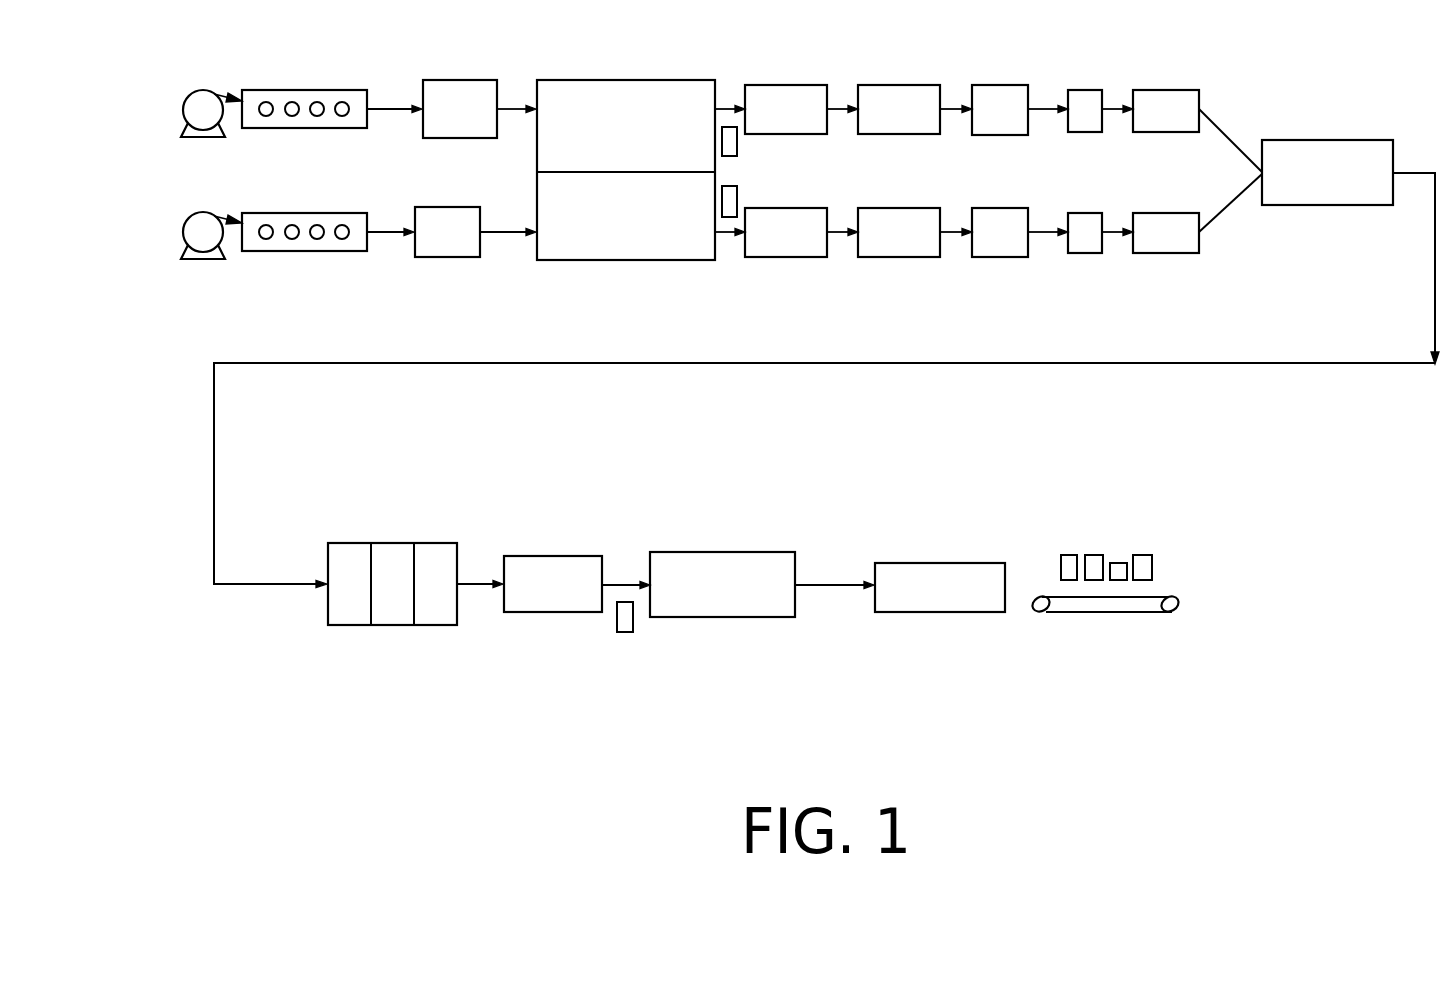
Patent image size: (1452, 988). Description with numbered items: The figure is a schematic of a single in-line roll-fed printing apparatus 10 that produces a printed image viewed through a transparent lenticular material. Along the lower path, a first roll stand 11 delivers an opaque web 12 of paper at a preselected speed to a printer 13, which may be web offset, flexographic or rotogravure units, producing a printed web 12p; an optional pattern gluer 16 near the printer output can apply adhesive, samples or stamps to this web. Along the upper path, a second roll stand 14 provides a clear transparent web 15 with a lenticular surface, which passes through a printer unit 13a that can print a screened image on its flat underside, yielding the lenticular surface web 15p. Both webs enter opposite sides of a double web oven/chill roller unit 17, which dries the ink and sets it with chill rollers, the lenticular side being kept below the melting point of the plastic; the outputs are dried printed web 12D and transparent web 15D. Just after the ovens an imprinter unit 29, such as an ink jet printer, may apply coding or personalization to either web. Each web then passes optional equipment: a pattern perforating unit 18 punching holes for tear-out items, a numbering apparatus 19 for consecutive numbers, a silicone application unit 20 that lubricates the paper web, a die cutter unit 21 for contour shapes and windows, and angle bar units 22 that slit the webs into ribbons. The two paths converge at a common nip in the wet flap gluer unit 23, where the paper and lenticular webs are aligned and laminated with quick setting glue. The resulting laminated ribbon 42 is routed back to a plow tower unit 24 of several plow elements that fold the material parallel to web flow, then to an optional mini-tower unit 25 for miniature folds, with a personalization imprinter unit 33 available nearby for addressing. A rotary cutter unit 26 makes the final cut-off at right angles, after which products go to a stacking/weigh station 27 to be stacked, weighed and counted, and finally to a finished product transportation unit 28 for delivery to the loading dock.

The in-line printing apparatus 10 is at (294, 68).
The first roll stand 11 is at (182, 231).
The opaque web 12 is at (225, 215).
The printed web 12p is at (387, 233).
The dried printed web 12D is at (722, 235).
The printer 13 is at (267, 252).
The printer unit 13a is at (267, 128).
The second roll stand 14 is at (187, 100).
The transparent web 15 is at (227, 93).
The lenticular surface web 15p is at (387, 110).
The transparent web 15D is at (723, 107).
The pattern gluer 16 is at (448, 80).
The double web oven/chill roller unit 17 is at (606, 80).
The pattern perforating unit 18 is at (780, 85).
The numbering apparatus 19 is at (893, 85).
The silicone application unit 20 is at (1000, 85).
The die cutter unit 21 is at (1087, 90).
The angle bar units 22 is at (1150, 90).
The wet flap gluer unit 23 is at (1300, 205).
The plow tower unit 24 is at (393, 543).
The mini-tower unit 25 is at (553, 556).
The rotary cutter unit 26 is at (723, 552).
The stacking/weigh station 27 is at (938, 563).
The finished product transportation unit 28 is at (1108, 632).
The imprinter unit 29 is at (733, 183).
The personalization imprinter unit 33 is at (635, 620).
The laminated ribbon 42 is at (1416, 175).